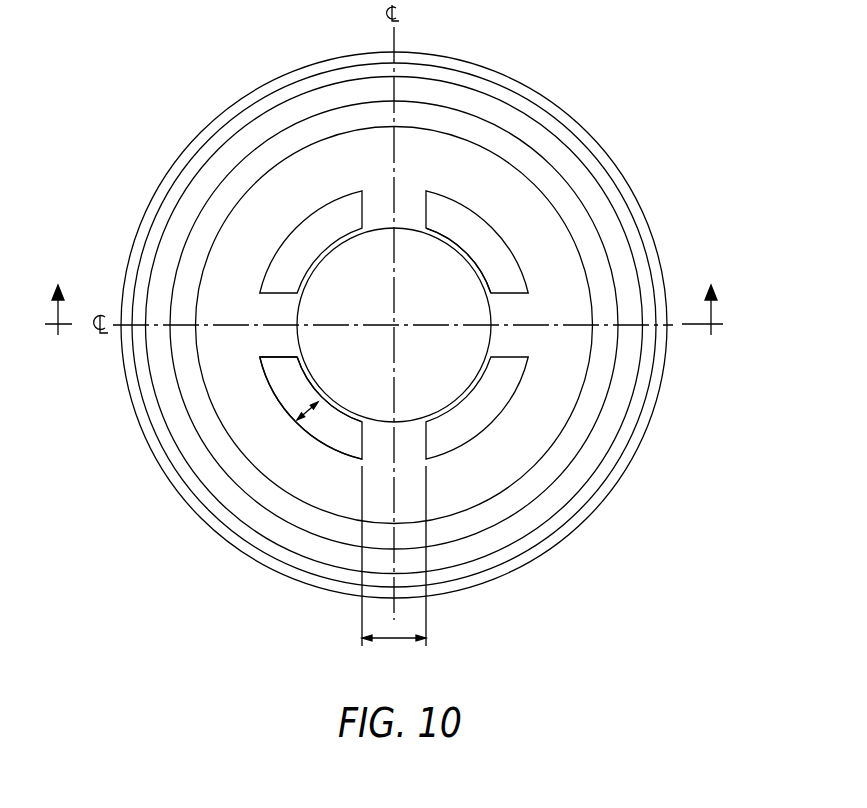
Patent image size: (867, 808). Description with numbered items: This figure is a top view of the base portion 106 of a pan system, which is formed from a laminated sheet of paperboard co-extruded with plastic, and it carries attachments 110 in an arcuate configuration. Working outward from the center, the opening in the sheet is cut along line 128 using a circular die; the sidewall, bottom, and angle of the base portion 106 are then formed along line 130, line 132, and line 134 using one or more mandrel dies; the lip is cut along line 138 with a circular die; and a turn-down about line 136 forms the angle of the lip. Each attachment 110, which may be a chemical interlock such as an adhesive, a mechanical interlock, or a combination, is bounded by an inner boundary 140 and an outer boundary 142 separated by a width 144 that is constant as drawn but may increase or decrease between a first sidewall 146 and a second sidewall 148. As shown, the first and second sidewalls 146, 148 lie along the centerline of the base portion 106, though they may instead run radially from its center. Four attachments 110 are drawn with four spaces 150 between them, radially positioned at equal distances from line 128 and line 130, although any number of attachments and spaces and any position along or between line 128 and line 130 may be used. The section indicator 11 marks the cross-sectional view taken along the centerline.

The section line 11- 11 is at (384, 326).
The base portion 106 is at (155, 102).
The attachment 110 is at (518, 257).
The line 128 is at (478, 262).
The line 130 is at (531, 182).
The line 132 is at (520, 137).
The line 134 is at (500, 98).
The line 136 is at (467, 72).
The line 138 is at (423, 53).
The inner boundary 140 is at (303, 377).
The outer boundary 142 is at (300, 415).
The width 144 is at (314, 405).
The first sidewall 146 is at (280, 357).
The second sidewall 148 is at (362, 442).
The space 150 is at (390, 640).